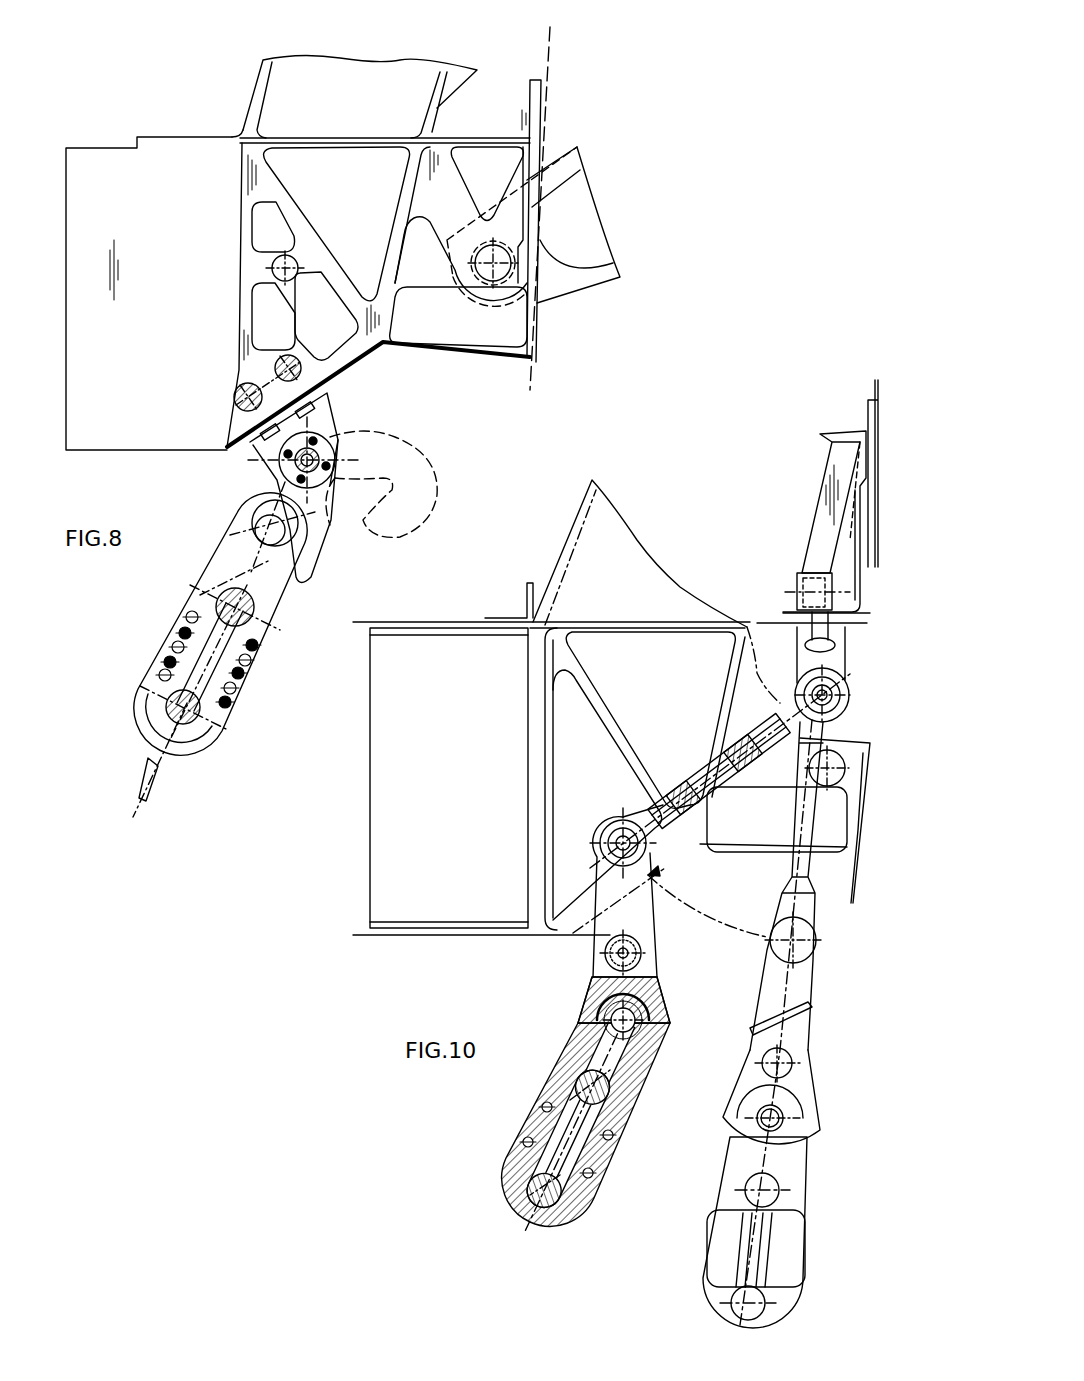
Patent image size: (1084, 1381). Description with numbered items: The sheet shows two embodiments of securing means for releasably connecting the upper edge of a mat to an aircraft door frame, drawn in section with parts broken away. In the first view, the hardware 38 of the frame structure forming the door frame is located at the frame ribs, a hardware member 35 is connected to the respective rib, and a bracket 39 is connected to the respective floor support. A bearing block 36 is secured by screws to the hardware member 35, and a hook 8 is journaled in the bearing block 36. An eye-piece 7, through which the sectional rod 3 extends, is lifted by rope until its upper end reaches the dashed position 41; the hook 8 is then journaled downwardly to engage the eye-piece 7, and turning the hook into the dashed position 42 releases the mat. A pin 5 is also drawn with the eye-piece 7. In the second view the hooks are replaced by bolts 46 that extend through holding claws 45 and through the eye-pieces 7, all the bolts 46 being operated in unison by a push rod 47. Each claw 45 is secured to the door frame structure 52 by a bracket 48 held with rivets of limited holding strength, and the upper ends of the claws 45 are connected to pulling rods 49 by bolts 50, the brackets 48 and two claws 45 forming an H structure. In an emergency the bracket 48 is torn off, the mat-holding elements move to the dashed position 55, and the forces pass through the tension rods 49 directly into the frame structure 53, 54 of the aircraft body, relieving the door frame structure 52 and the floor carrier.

In FIG. 8, the hardware 38 is at (385, 66).
In FIG. 8, the hardware member 35 is at (234, 128).
In FIG. 8, the bracket 39 is at (66, 372).
In FIG. 8, the bearing block 36 is at (333, 421).
In FIG. 8, the dashed line position 42 is at (430, 485).
In FIG. 8, the position 41 is at (258, 490).
In FIG. 8, the eye-piece 7 is at (220, 563).
In FIG. 10, the eye-piece 7 is at (572, 1048).
In FIG. 8, the hook 8 is at (313, 563).
In FIG. 8, the sectional rod 3 is at (160, 733).
In FIG. 10, the sectional rod 3 is at (533, 1193).
In FIG. 8, the pin 5 is at (153, 793).
In FIG. 10, the frame structure 54 is at (813, 527).
In FIG. 10, the frame structure 53 is at (837, 667).
In FIG. 10, the frame structure 52 is at (563, 737).
In FIG. 10, the pulling rod 49 is at (697, 767).
In FIG. 10, the bolt 50 is at (617, 822).
In FIG. 10, the bracket 48 is at (597, 917).
In FIG. 10, the push rod 47 is at (642, 955).
In FIG. 10, the holding claw 45 is at (593, 992).
In FIG. 10, the bolt 46 is at (637, 1017).
In FIG. 10, the dashed line position 55 is at (810, 1180).